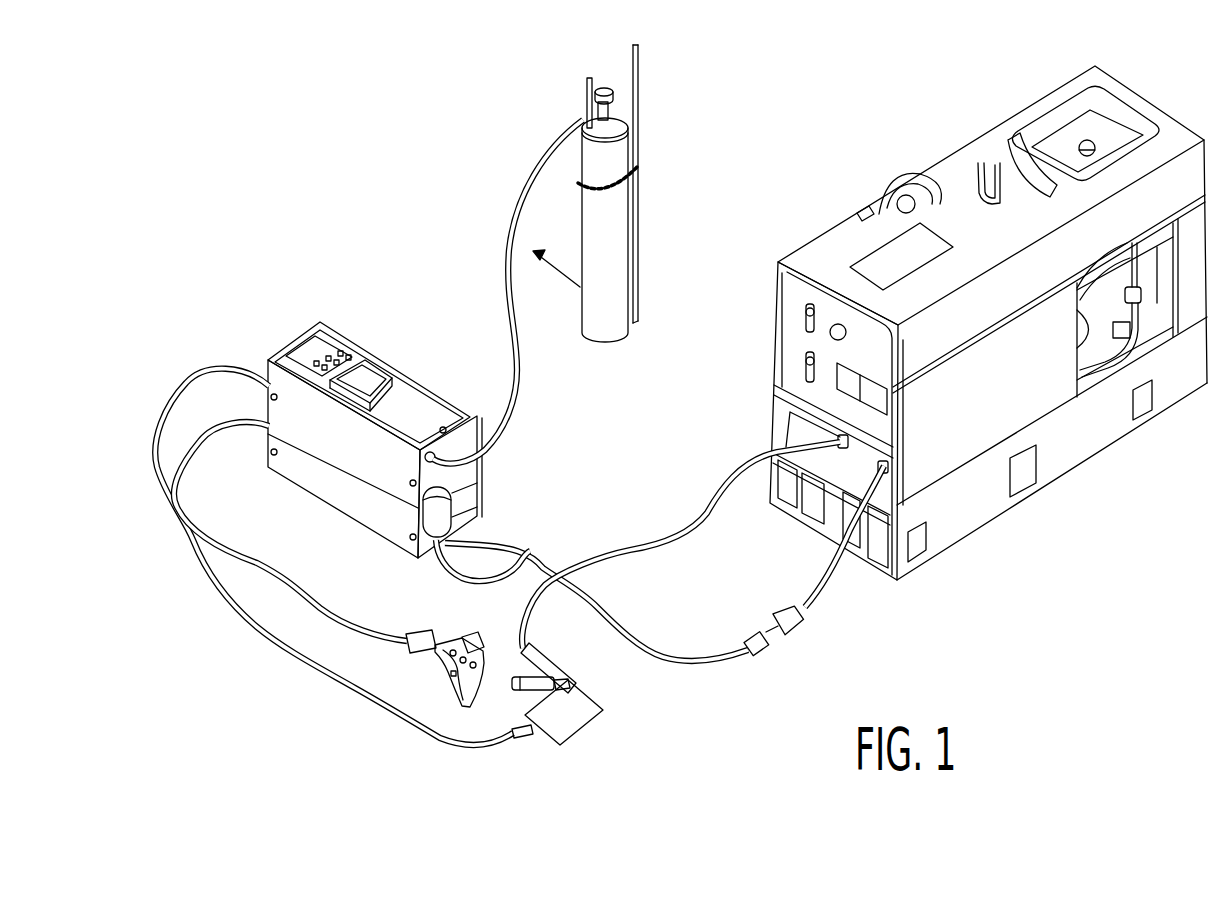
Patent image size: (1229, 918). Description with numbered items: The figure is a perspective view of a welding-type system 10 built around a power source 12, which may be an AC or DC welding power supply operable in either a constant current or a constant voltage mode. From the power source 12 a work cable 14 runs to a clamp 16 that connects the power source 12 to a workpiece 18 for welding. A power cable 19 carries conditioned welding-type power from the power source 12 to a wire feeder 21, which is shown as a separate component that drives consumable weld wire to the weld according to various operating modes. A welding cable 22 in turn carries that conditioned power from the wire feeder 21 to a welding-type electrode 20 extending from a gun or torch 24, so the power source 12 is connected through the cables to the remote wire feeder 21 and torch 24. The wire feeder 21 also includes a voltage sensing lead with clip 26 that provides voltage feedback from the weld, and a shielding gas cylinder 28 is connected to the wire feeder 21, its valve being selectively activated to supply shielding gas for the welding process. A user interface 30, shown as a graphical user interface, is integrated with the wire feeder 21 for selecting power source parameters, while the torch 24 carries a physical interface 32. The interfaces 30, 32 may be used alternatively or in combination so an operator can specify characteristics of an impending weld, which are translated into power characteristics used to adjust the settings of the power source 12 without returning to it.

The welding-type system 10 is at (311, 106).
The power source 12 is at (1003, 125).
The work cable 14 is at (636, 547).
The clamp 16 is at (543, 658).
The workpiece 18 is at (576, 720).
The power cable 19 is at (707, 661).
The welding-type electrode 20 is at (455, 660).
The wire feeder 21 is at (373, 411).
The welding cable 22 is at (189, 375).
The gun or torch 24 is at (427, 680).
The voltage sensing lead with clip 26 is at (531, 738).
The shielding gas cylinder 28 is at (580, 118).
The user interface 30 is at (353, 342).
The physical interface 32 is at (474, 646).